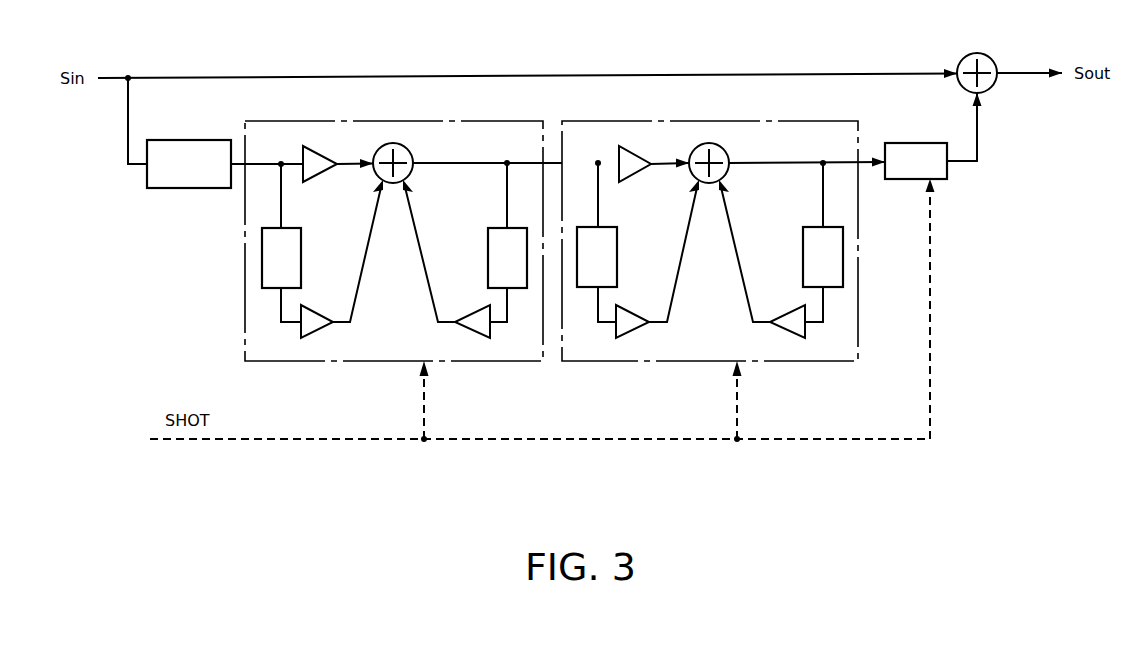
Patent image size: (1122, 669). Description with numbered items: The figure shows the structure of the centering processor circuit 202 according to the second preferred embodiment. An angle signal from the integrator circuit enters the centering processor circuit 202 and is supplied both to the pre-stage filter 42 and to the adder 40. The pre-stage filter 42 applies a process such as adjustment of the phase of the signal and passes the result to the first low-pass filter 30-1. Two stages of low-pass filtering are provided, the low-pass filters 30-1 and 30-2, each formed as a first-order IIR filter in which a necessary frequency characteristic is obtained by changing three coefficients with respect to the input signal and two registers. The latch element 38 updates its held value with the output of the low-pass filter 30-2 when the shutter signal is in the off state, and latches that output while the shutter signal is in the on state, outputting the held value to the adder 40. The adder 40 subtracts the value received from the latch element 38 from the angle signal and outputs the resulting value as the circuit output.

The pre-stage filter 42 is at (187, 188).
The low-pass filter 30-1 is at (283, 361).
The low-pass filter 30-2 is at (600, 361).
The latch element 38 is at (897, 143).
The adder 40 is at (990, 57).
The centering processor circuit 202 is at (613, 517).